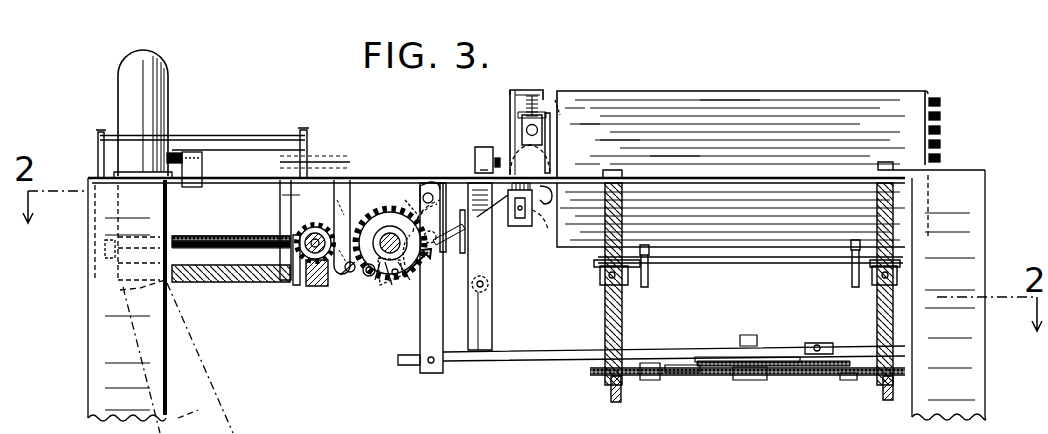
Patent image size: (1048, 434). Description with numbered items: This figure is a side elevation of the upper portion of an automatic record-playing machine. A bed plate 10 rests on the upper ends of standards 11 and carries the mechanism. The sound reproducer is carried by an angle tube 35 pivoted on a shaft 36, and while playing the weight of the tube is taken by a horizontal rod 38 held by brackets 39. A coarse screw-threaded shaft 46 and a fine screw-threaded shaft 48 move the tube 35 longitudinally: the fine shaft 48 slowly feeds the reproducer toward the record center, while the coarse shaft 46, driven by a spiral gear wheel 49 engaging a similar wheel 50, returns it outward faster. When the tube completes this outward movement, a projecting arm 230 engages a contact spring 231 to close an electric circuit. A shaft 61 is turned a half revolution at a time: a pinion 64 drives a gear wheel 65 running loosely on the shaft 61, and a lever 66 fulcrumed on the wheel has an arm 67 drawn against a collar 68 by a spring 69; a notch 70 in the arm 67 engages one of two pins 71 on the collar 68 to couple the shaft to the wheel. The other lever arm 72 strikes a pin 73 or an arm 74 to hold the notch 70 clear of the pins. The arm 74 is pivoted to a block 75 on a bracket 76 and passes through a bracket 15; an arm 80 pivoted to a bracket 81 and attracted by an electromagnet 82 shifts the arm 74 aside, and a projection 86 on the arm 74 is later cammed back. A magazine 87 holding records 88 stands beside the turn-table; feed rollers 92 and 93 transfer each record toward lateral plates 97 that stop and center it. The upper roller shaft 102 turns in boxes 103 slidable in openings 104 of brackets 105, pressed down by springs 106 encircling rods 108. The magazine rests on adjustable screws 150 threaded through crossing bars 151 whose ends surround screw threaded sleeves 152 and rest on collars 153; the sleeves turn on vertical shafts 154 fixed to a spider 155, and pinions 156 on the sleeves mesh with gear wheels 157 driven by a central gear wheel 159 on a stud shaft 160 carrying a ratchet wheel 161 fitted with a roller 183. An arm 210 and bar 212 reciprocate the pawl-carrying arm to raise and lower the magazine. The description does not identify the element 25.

The bed plate 10 is at (89, 180).
The standards 11 is at (93, 316).
The bracket 15 is at (470, 183).
The support bar 25 is at (310, 194).
The angle tube 35 is at (123, 67).
The shaft 36 is at (230, 242).
The horizontal rod 38 is at (225, 134).
The brackets 39 is at (99, 131).
The coarse screw-threaded shaft 46 is at (231, 282).
The fine screw-threaded shaft 48 is at (203, 236).
The spiral gear wheel 49 is at (303, 228).
The spiral gear wheel 50 is at (316, 285).
The shaft 61 is at (351, 272).
The pinion 64 is at (278, 282).
The gear wheel 65 is at (398, 195).
The lever 66 is at (366, 276).
The arm 67 is at (385, 284).
The collar 68 is at (382, 204).
The spring 69 is at (412, 291).
The notch 70 is at (393, 292).
The pins 71 is at (416, 202).
The arm 72 is at (385, 240).
The pin 73 is at (341, 274).
The arm 74 is at (347, 197).
The block 75 is at (512, 226).
The bracket 76 is at (526, 226).
The arm 80 is at (464, 237).
The bracket 81 is at (489, 318).
The electromagnet 82 is at (489, 288).
The projection 86 is at (441, 188).
The magazine 87 is at (838, 90).
The sound reproducing records 88 is at (942, 116).
The feed roller 92 is at (551, 197).
The feed roller 93 is at (560, 106).
The lateral plates 97 is at (250, 150).
The shaft 102 is at (538, 130).
The boxes 103 is at (519, 115).
The openings 104 is at (522, 128).
The brackets 105 is at (548, 160).
The springs 106 is at (544, 93).
The rods 108 is at (531, 89).
The vertically adjustable screws 150 is at (651, 260).
The bars 151 is at (762, 263).
The screw threaded sleeves 152 is at (605, 298).
The collars 153 is at (600, 272).
The vertical shafts 154 is at (611, 393).
The brace plate or spider 155 is at (797, 367).
The pinions 156 is at (592, 368).
The gear wheels 157 is at (676, 364).
The gear wheel 159 is at (741, 381).
The stud shaft 160 is at (757, 344).
The ratchet wheel 161 is at (722, 357).
The roller 183 is at (688, 373).
The arm 210 is at (420, 345).
The bar 212 is at (537, 351).
The projecting arm 230 is at (172, 152).
The contact spring 231 is at (186, 152).